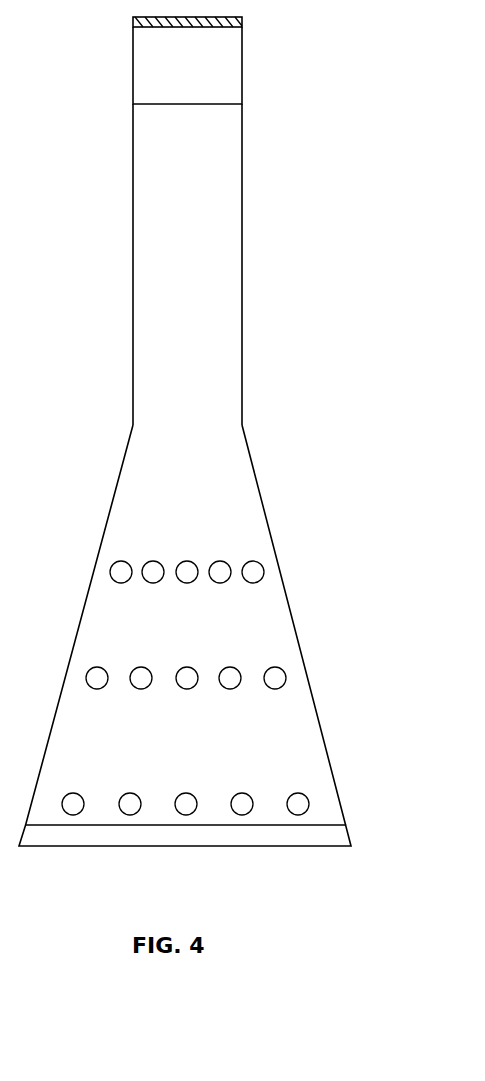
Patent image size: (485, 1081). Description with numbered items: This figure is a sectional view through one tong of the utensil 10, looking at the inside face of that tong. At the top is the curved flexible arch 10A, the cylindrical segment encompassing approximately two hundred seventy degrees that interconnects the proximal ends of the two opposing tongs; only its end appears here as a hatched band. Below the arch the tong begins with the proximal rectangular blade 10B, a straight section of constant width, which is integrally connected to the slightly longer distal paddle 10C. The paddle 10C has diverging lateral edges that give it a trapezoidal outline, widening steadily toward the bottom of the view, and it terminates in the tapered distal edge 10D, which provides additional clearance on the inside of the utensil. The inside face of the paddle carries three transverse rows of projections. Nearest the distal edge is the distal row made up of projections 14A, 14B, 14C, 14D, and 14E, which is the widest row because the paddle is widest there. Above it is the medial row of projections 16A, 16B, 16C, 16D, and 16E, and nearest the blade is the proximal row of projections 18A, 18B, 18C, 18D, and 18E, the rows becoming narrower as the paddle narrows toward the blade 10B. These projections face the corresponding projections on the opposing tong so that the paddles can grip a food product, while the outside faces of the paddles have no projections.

The utensil 10 is at (104, 216).
The curved flexible arch 10A is at (133, 66).
The proximal rectangular blade 10B is at (133, 155).
The distal paddle 10C is at (255, 472).
The tapered distal edge 10D is at (300, 836).
The projection 14A is at (76, 793).
The projection 14B is at (132, 793).
The projection 14C is at (188, 793).
The projection 14D is at (245, 793).
The projection 14E is at (302, 793).
The projection 16A is at (98, 667).
The projection 16B is at (143, 667).
The projection 16C is at (189, 667).
The projection 16D is at (232, 667).
The projection 16E is at (278, 667).
The projection 18A is at (119, 561).
The projection 18B is at (151, 561).
The projection 18C is at (189, 561).
The projection 18D is at (222, 561).
The projection 18E is at (254, 561).